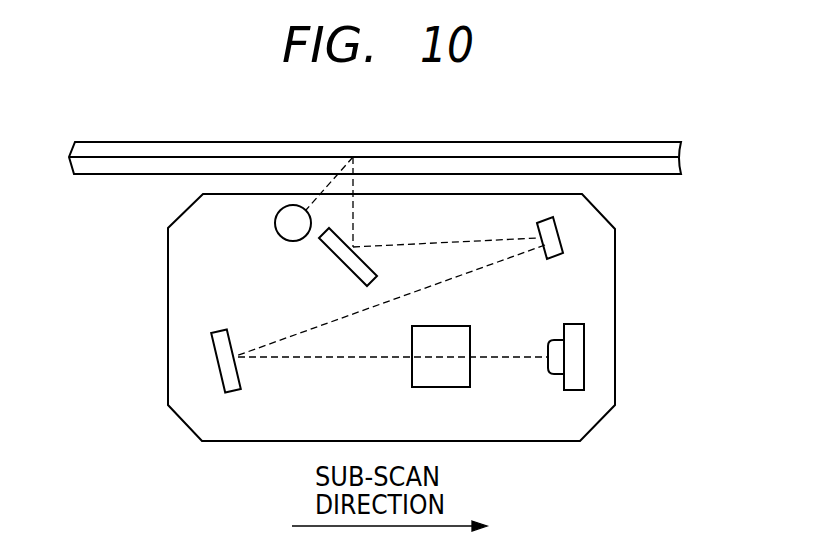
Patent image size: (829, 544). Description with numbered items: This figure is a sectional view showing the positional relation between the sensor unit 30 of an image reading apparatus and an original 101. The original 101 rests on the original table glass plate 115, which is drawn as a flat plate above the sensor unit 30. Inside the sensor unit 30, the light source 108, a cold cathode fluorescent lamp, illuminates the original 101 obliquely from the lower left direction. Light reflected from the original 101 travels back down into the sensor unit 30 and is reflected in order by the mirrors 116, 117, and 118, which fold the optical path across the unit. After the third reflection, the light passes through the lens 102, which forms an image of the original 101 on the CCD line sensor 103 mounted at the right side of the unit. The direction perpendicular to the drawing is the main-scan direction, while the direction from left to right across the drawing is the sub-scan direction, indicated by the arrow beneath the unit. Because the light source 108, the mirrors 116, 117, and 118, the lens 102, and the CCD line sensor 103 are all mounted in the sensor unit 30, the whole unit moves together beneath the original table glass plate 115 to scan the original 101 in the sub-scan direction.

The original 101 is at (560, 149).
The original table glass plate 115 is at (640, 163).
The sensor unit 30 is at (615, 318).
The light source 108 is at (276, 224).
The mirror 116 is at (338, 262).
The mirror 117 is at (563, 240).
The mirror 118 is at (219, 364).
The lens 102 is at (470, 378).
The CCD line sensor 103 is at (584, 370).